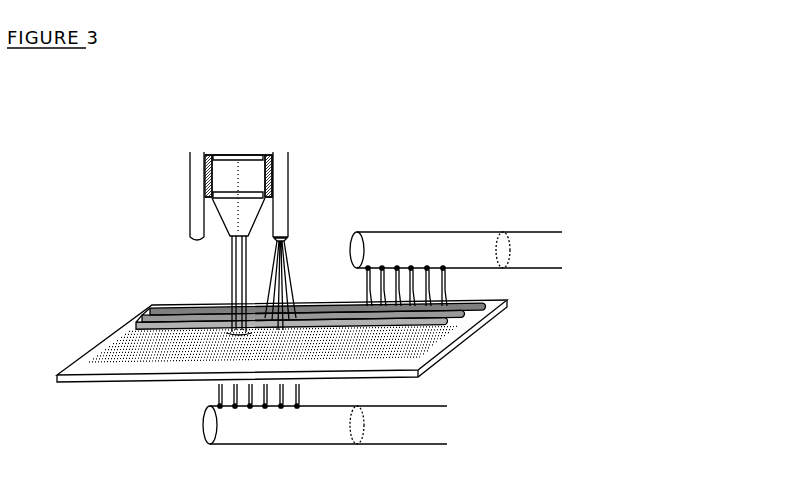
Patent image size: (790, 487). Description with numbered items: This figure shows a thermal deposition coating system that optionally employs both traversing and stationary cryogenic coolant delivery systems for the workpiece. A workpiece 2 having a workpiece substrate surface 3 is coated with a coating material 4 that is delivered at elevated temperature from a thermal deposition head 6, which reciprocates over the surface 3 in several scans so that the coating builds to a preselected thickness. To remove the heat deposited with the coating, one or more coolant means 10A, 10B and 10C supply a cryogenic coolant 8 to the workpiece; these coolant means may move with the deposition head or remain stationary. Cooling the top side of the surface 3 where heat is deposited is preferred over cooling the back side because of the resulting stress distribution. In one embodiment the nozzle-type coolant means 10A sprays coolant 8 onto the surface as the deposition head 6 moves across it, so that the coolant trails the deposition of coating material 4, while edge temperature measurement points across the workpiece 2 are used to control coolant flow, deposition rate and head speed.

The workpiece 2 is at (110, 378).
The workpiece substrate surface 3 is at (135, 320).
The coating material 4 is at (228, 292).
The thermal deposition head 6 is at (238, 152).
The cryogenic coolant 8 is at (295, 275).
The coolant means 10A is at (190, 167).
The coolant means 10B is at (437, 229).
The coolant means 10C is at (204, 428).